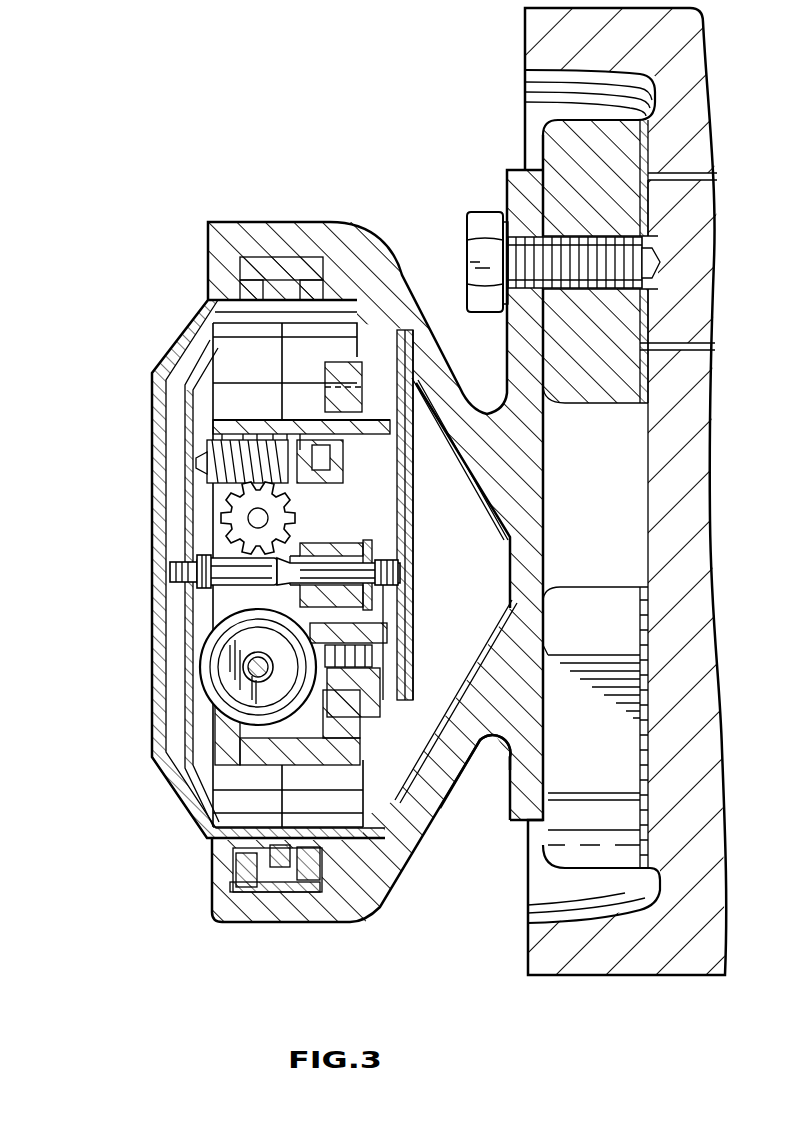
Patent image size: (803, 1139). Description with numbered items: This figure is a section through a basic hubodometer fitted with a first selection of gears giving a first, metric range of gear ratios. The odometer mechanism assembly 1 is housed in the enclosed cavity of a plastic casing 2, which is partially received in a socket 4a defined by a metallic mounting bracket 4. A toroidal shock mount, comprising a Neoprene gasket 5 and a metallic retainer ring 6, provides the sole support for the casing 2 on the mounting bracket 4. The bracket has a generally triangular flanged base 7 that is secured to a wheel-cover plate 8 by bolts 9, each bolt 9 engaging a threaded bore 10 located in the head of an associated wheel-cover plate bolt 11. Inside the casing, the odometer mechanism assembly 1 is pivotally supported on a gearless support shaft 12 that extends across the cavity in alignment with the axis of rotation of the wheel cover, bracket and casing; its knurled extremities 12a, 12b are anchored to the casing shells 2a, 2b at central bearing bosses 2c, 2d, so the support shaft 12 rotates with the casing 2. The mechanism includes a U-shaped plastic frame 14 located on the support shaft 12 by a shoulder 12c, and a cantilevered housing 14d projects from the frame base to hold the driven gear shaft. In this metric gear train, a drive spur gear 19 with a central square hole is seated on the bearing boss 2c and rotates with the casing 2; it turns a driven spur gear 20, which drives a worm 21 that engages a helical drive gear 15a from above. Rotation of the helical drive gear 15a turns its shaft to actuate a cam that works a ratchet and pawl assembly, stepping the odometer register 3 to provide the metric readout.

The odometer mechanism assembly 1 is at (413, 483).
The plastic casing 2 is at (188, 836).
The casing shell 2a is at (162, 770).
The casing shell 2b is at (407, 843).
The central bearing boss 2c is at (177, 555).
The central bearing boss 2d is at (400, 552).
The odometer register 3 is at (215, 645).
The metallic mounting bracket 4 is at (491, 752).
The socket 4a is at (456, 745).
The Neoprene gasket 5 is at (295, 890).
The metallic retainer ring 6 is at (262, 895).
The flanged base 7 is at (510, 722).
The wheel-cover plate 8 is at (557, 952).
The bolt 9 is at (483, 212).
The threaded bore 10 is at (523, 162).
The wheel-cover plate bolt 11 is at (567, 344).
The support shaft 12 is at (183, 607).
The knurled extremity 12a is at (170, 580).
The knurled extremity 12b is at (400, 572).
The shoulder 12c is at (215, 588).
The U-shaped plastic frame 14 is at (413, 847).
The cantilevered housing 14d is at (257, 430).
The helical drive gear 15a is at (240, 510).
The drive spur gear 19 is at (413, 527).
The driven spur gear 20 is at (393, 417).
The driven worm gear 21 is at (228, 448).